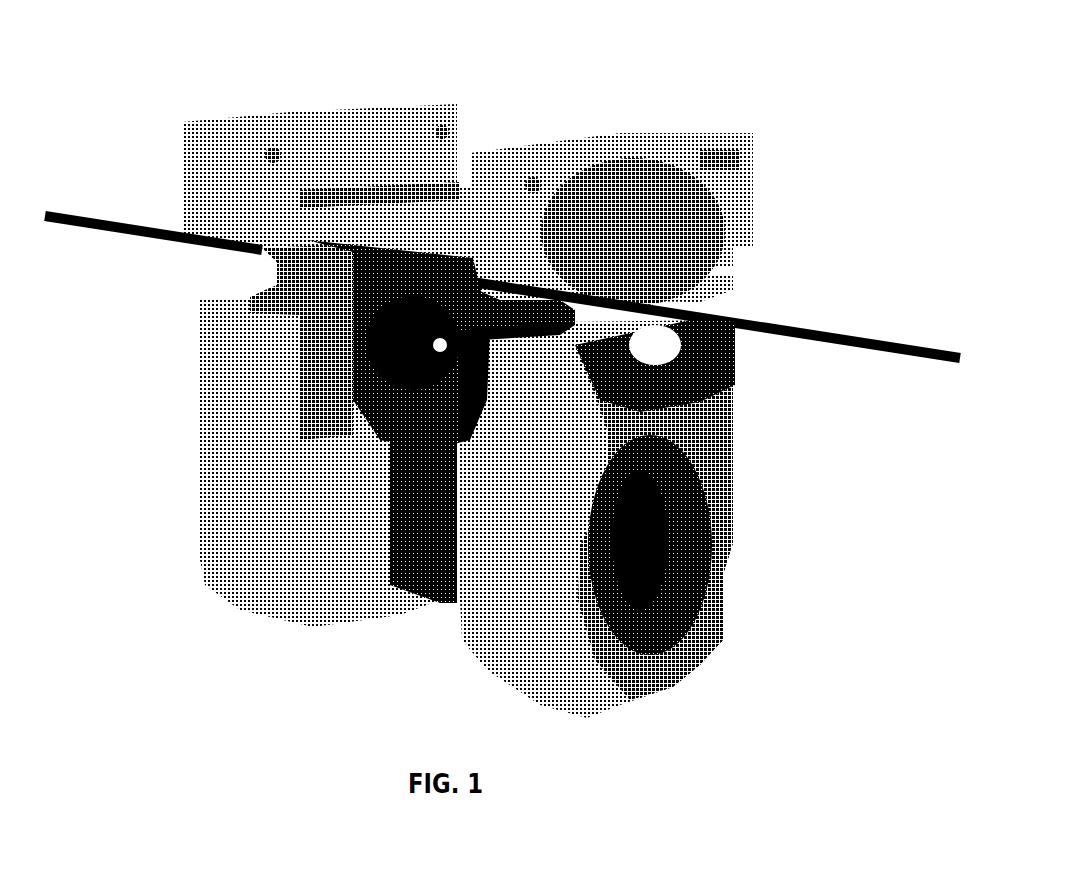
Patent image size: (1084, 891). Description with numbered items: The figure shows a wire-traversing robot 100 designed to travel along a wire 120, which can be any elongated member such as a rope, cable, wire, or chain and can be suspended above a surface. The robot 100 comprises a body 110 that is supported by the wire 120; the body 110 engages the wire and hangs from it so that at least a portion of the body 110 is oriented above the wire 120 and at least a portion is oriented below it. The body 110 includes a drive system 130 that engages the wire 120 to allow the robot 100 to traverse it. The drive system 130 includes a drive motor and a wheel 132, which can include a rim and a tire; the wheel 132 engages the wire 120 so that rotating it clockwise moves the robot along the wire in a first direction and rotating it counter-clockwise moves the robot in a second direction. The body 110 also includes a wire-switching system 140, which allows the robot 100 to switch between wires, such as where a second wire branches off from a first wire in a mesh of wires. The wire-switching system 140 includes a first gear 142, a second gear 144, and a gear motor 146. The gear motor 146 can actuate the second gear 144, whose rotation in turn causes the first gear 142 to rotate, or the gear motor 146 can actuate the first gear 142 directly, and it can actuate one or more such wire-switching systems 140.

The robot 100 is at (184, 59).
The body 110 is at (442, 92).
The wire 120 is at (147, 230).
The drive system 130 is at (326, 378).
The wheel 132 is at (355, 308).
The wire-switching system 140 is at (698, 443).
The first gear 142 is at (648, 388).
The second gear 144 is at (640, 557).
The gear motor 146 is at (435, 593).